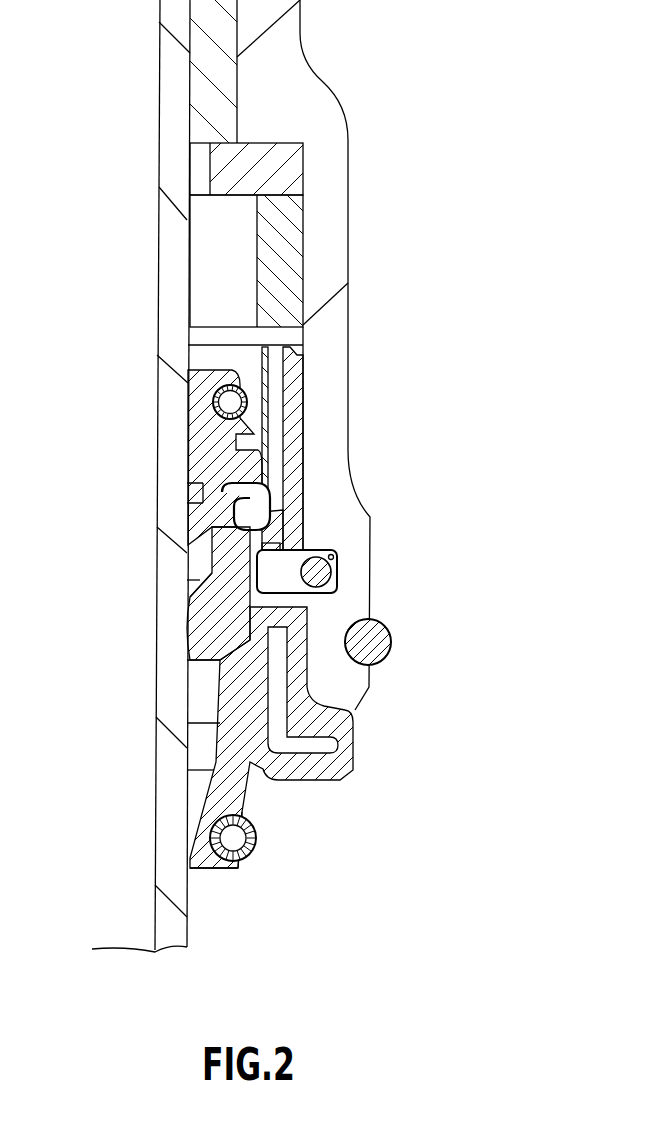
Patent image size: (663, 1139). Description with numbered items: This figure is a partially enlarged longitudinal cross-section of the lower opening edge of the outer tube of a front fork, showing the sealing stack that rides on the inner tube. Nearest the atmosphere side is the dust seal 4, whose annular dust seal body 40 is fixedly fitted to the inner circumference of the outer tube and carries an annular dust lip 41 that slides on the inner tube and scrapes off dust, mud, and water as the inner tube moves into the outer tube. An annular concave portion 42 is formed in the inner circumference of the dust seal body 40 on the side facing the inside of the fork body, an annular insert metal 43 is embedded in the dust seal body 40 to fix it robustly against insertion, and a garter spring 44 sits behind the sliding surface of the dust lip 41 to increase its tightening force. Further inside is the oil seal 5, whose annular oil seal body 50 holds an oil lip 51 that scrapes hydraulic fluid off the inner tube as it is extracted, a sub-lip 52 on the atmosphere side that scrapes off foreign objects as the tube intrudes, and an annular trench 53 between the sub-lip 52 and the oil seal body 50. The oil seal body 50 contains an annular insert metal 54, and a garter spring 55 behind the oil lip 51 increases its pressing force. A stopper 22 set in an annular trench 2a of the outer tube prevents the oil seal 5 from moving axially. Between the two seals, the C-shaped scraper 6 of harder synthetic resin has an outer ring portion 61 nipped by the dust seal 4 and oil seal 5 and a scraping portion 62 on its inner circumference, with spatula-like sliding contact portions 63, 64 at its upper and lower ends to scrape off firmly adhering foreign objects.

The annular trench 2a is at (343, 563).
The dust seal 4 is at (356, 748).
The oil seal 5 is at (303, 417).
The scraper 6 is at (253, 541).
The stopper 22 is at (333, 572).
The dust seal body 40 is at (349, 706).
The dust lip 41 is at (202, 870).
The annular concave portion 42 is at (305, 613).
The insert metal 43 is at (323, 747).
The garter spring 44 is at (257, 845).
The oil seal body 50 is at (287, 440).
The oil lip 51 is at (193, 420).
The sub-lip 52 is at (187, 550).
The annular trench 53 is at (190, 580).
The insert metal 54 is at (273, 378).
The garter spring 55 is at (207, 383).
The outer ring portion 61 is at (272, 512).
The scraping portion 62 is at (188, 628).
The sliding contact portion 63 is at (190, 663).
The sliding contact portion 64 is at (188, 603).